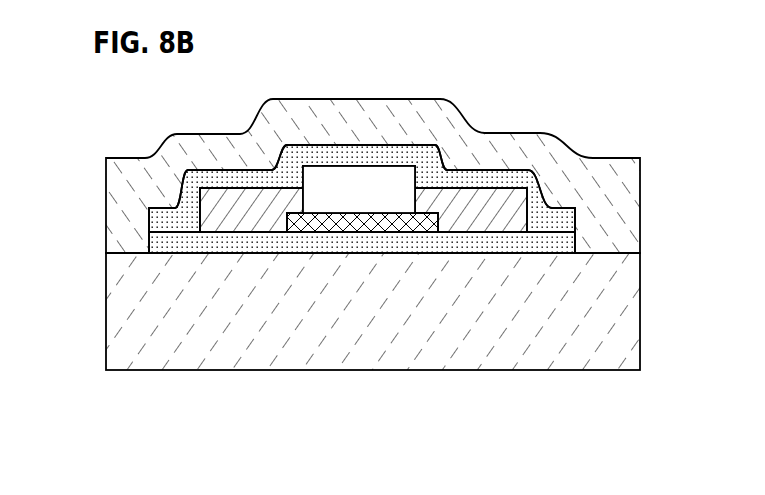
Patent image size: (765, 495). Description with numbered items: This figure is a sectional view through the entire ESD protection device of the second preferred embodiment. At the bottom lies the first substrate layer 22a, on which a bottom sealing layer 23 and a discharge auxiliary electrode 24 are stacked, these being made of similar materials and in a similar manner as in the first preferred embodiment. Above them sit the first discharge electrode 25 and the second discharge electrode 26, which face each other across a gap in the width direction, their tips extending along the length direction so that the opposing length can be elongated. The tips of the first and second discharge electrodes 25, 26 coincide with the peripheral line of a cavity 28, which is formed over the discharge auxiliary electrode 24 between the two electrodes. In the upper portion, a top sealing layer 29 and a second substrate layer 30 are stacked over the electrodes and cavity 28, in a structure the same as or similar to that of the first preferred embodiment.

The first substrate layer 22a is at (107, 330).
The bottom sealing layer 23 is at (418, 245).
The discharge auxiliary electrode 24 is at (357, 230).
The first discharge electrode 25 is at (250, 217).
The second discharge electrode 26 is at (493, 218).
The cavity 28 is at (358, 183).
The top sealing layer 29 is at (422, 153).
The second substrate layer 30 is at (512, 133).